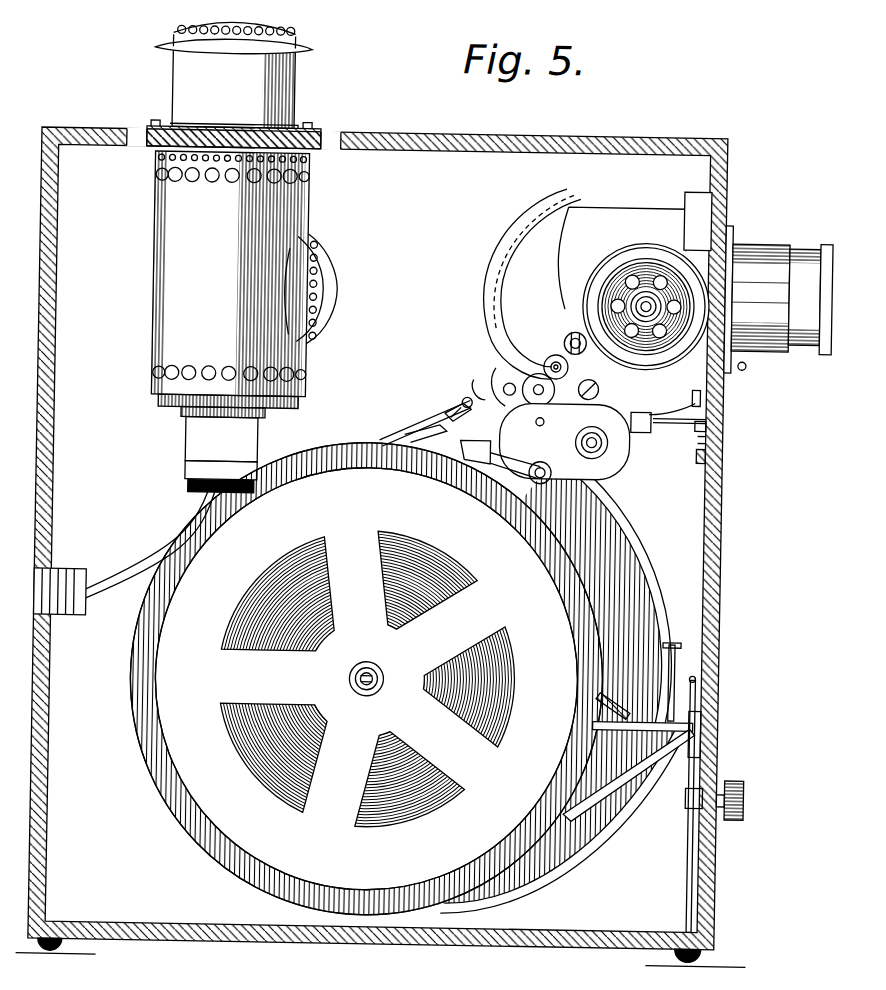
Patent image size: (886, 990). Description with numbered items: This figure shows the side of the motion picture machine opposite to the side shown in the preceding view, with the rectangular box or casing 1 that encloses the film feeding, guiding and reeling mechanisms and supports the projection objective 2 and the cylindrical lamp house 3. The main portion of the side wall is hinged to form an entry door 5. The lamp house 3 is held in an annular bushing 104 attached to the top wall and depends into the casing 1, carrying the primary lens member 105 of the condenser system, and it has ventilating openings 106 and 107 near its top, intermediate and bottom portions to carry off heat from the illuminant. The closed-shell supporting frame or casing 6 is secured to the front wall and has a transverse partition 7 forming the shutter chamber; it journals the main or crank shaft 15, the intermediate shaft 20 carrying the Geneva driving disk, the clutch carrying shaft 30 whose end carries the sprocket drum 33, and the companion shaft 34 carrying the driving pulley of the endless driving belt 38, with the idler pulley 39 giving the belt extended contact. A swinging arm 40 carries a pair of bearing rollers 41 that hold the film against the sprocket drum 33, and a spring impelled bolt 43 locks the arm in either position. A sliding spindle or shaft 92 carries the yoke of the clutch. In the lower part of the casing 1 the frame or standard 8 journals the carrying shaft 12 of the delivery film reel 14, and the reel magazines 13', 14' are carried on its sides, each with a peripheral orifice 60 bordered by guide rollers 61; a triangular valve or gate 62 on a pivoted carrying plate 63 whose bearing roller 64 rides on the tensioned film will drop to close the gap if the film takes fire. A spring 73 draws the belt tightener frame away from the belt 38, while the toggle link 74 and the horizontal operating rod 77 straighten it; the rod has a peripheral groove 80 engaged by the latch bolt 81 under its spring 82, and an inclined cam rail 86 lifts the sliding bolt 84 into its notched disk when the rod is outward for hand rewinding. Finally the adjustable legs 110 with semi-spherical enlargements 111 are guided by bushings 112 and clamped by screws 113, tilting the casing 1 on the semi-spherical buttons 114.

The box or casing 1 is at (407, 245).
The projection objective 2 is at (779, 300).
The lamp house 3 is at (172, 384).
The entry door 5 is at (443, 150).
The supporting frame or casing 6 is at (643, 209).
The transverse partition 7 is at (698, 221).
The frame or standard 8 is at (629, 732).
The carrying shaft 12 is at (358, 676).
The reel magazine 13' is at (547, 682).
The delivery film reel 14 is at (366, 679).
The reel magazine 14' is at (342, 678).
The main or crank shaft 15 is at (568, 329).
The intermediate shaft 20 is at (651, 290).
The clutch carrying shaft 30 is at (548, 387).
The sprocket drum 33 is at (500, 370).
The companion shaft 34 is at (583, 433).
The endless driving belt 38 is at (518, 470).
The idler pulley 39 is at (552, 472).
The swinging arm 40 is at (595, 370).
The bearing rollers 41 is at (548, 352).
The spring impelled bolt 43 is at (552, 360).
The peripheral orifice 60 is at (466, 446).
The guide and friction reducing rollers 61 is at (436, 440).
The swinging valve or gate 62 is at (452, 406).
The carrying plate or frame 63 is at (440, 421).
The bearing roller 64 is at (466, 396).
The spring 73 is at (618, 686).
The link 74 is at (556, 490).
The operating rod 77 is at (672, 414).
The peripheral groove 80 is at (712, 414).
The latch bolt 81 is at (712, 436).
The spring 82 is at (705, 448).
The sliding bolt 84 is at (712, 388).
The inclined track or cam rail 86 is at (712, 402).
The spindle or shaft 92 is at (508, 381).
The annular bushing 104 is at (297, 124).
The primary lens member 105 is at (343, 296).
The ventilating openings 106 is at (229, 30).
The ventilating openings 107 is at (213, 363).
The adjustable legs 110 is at (698, 848).
The semi-spherical enlargement 111 is at (716, 946).
The guide bushing 112 is at (697, 789).
The clamping screw 113 is at (756, 787).
The semi-spherical button 114 is at (66, 931).